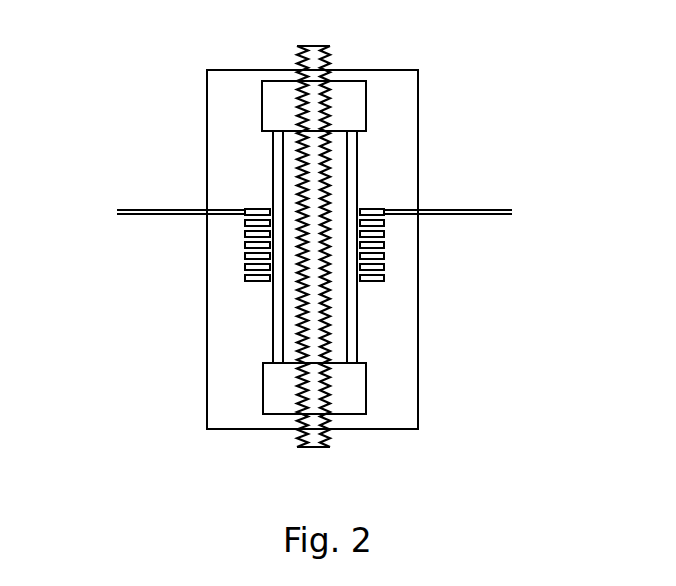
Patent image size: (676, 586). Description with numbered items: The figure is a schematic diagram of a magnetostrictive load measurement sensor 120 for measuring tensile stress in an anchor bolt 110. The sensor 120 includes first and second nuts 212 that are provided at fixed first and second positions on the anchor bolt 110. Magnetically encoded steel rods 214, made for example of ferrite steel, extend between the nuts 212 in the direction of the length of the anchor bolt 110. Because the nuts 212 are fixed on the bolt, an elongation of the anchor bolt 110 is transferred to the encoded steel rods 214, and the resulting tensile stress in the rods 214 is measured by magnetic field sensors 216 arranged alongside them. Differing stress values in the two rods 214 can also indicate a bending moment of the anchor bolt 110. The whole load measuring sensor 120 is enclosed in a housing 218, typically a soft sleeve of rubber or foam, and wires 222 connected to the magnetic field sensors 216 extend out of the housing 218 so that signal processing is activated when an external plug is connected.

The magnetostrictive load measurement sensor 120 is at (137, 90).
The anchor bolt 110 is at (330, 54).
The nuts 212 is at (366, 115).
The magnetically encoded steel rods 214 is at (274, 303).
The magnetic field sensors 216 is at (245, 225).
The housing 218 is at (207, 127).
The wires 222 is at (460, 211).